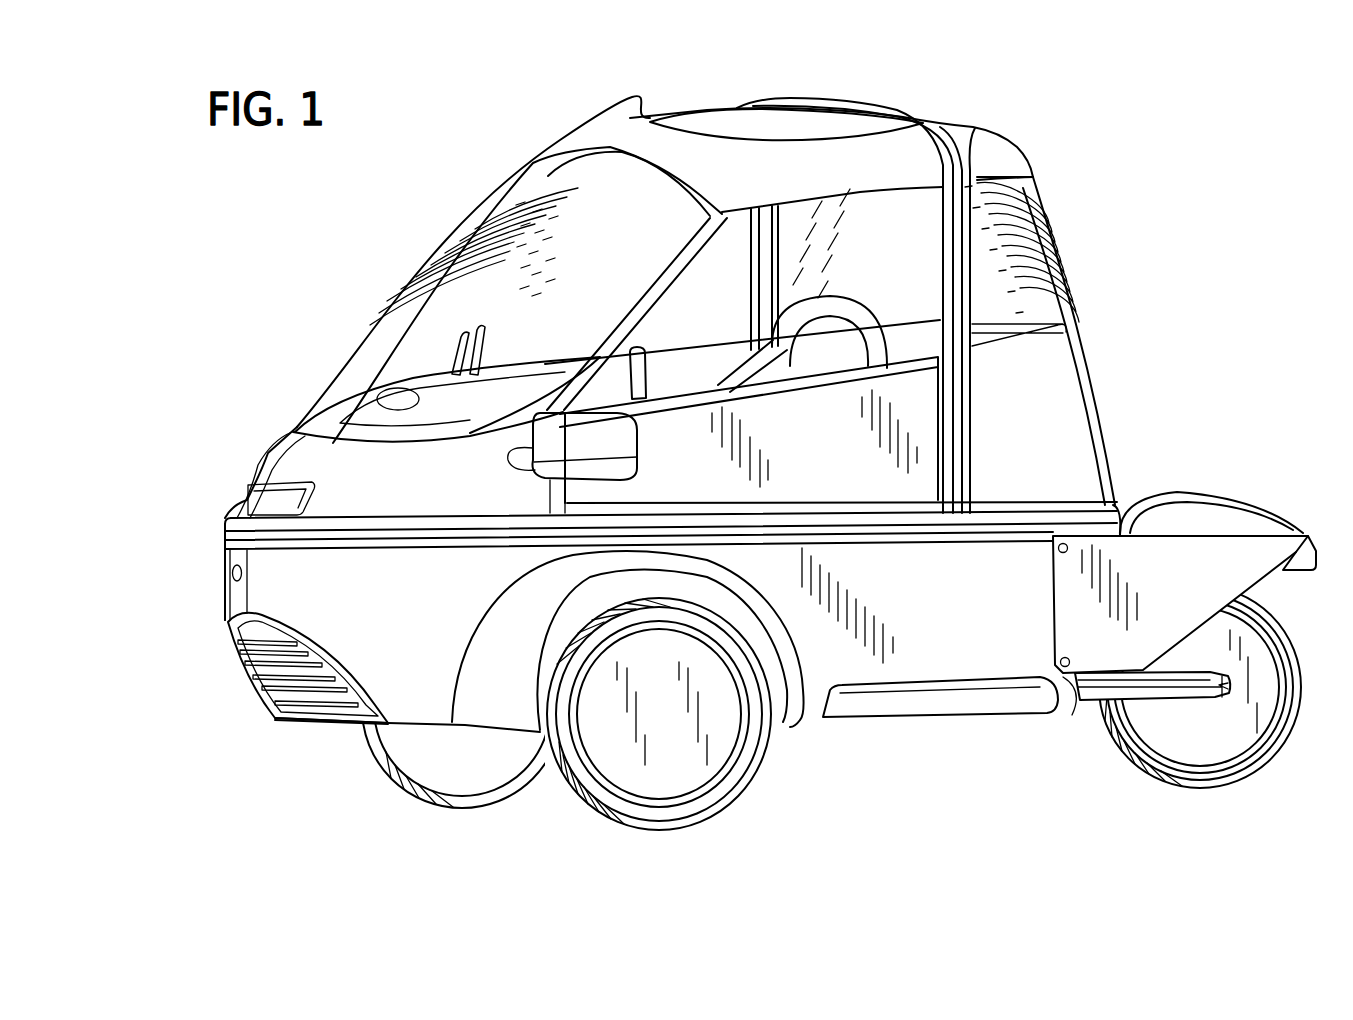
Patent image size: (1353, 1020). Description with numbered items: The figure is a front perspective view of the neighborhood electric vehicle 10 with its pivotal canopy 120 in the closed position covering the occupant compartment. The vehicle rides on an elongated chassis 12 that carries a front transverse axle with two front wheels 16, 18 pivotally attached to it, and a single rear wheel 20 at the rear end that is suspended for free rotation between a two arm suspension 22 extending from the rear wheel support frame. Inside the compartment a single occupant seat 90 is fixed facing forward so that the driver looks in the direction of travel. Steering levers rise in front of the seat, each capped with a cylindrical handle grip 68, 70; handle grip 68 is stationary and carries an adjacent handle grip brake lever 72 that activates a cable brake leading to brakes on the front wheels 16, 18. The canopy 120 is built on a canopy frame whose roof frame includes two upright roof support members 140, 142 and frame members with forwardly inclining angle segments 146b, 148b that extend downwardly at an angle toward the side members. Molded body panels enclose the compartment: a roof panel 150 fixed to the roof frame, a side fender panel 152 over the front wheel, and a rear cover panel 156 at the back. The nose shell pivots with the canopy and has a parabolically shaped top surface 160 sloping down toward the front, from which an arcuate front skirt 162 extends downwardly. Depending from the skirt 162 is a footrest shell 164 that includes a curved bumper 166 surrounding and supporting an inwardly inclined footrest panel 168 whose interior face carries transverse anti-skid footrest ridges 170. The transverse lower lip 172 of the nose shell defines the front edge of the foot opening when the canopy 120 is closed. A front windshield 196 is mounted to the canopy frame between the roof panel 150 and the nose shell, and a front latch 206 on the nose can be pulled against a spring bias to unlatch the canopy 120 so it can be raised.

The electric vehicle 10 is at (403, 233).
The chassis 12 is at (902, 737).
The wheel 16 is at (512, 792).
The wheel 18 is at (756, 775).
The rear wheel 20 is at (1118, 740).
The two arm suspension 22 is at (1165, 700).
The handle grip 68 is at (487, 343).
The handle grip 70 is at (648, 380).
The handle grip brake lever 72 is at (450, 357).
The single occupant seat 90 is at (851, 302).
The pivotal canopy 120 is at (541, 157).
The roof support member 140 is at (960, 240).
The roof support member 142 is at (765, 239).
The angle segment 146b is at (668, 285).
The angle segment 148b is at (462, 280).
The roof panel 150 is at (634, 118).
The side fender panel 152 is at (497, 697).
The rear cover panel 156 is at (1242, 500).
The top surface 160 is at (335, 423).
The front skirt 162 is at (287, 462).
The footrest shell 164 is at (222, 613).
The curved bumper 166 is at (376, 610).
The footrest panel 168 is at (272, 689).
The anti-skid footrest ridges 170 is at (302, 693).
The lower lip 172 is at (330, 724).
The front windshield 196 is at (402, 290).
The front latch 206 is at (230, 575).